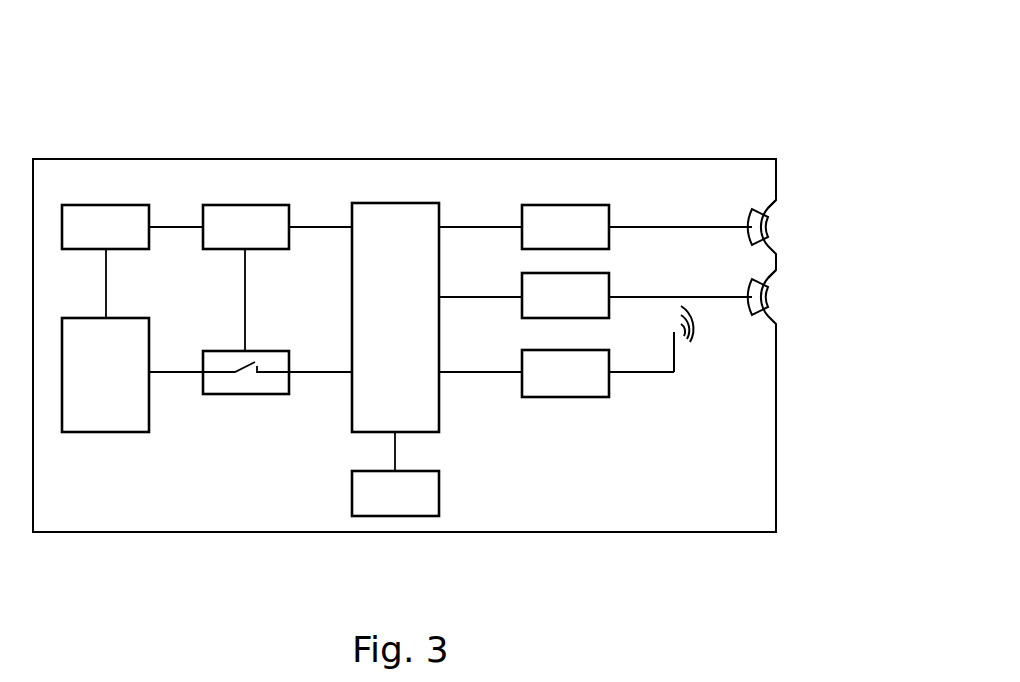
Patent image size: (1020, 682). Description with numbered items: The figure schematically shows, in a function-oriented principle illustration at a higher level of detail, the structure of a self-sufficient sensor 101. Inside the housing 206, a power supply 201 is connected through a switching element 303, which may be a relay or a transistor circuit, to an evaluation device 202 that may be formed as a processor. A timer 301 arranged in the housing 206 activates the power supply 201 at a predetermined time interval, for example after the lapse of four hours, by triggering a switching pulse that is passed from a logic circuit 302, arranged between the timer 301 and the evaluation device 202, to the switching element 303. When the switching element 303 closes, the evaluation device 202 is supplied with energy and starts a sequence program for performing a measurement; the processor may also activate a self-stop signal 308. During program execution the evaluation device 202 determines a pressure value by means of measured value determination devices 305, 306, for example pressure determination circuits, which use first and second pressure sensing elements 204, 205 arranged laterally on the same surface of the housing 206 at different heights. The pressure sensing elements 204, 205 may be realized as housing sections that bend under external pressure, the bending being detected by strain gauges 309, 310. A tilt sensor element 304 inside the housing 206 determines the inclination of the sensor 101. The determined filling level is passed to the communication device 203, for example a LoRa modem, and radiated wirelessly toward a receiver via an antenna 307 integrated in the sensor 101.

The self-sufficient sensor 101 is at (735, 90).
The power supply 201 is at (118, 432).
The evaluation device 202 is at (383, 203).
The communication device 203 is at (570, 397).
The first pressure sensing element 204 is at (768, 228).
The second pressure sensing element 205 is at (770, 297).
The housing 206 is at (776, 384).
The timer 301 is at (106, 205).
The logic circuit 302 is at (230, 205).
The switching element 303 is at (245, 396).
The tilt sensor element 304 is at (390, 517).
The first measured value determination device 305 is at (558, 205).
The second measured value determination device 306 is at (522, 275).
The antenna 307 is at (657, 375).
The self-stop signal 308 is at (330, 226).
The first strain gauge 309 is at (752, 207).
The second strain gauge 310 is at (750, 277).